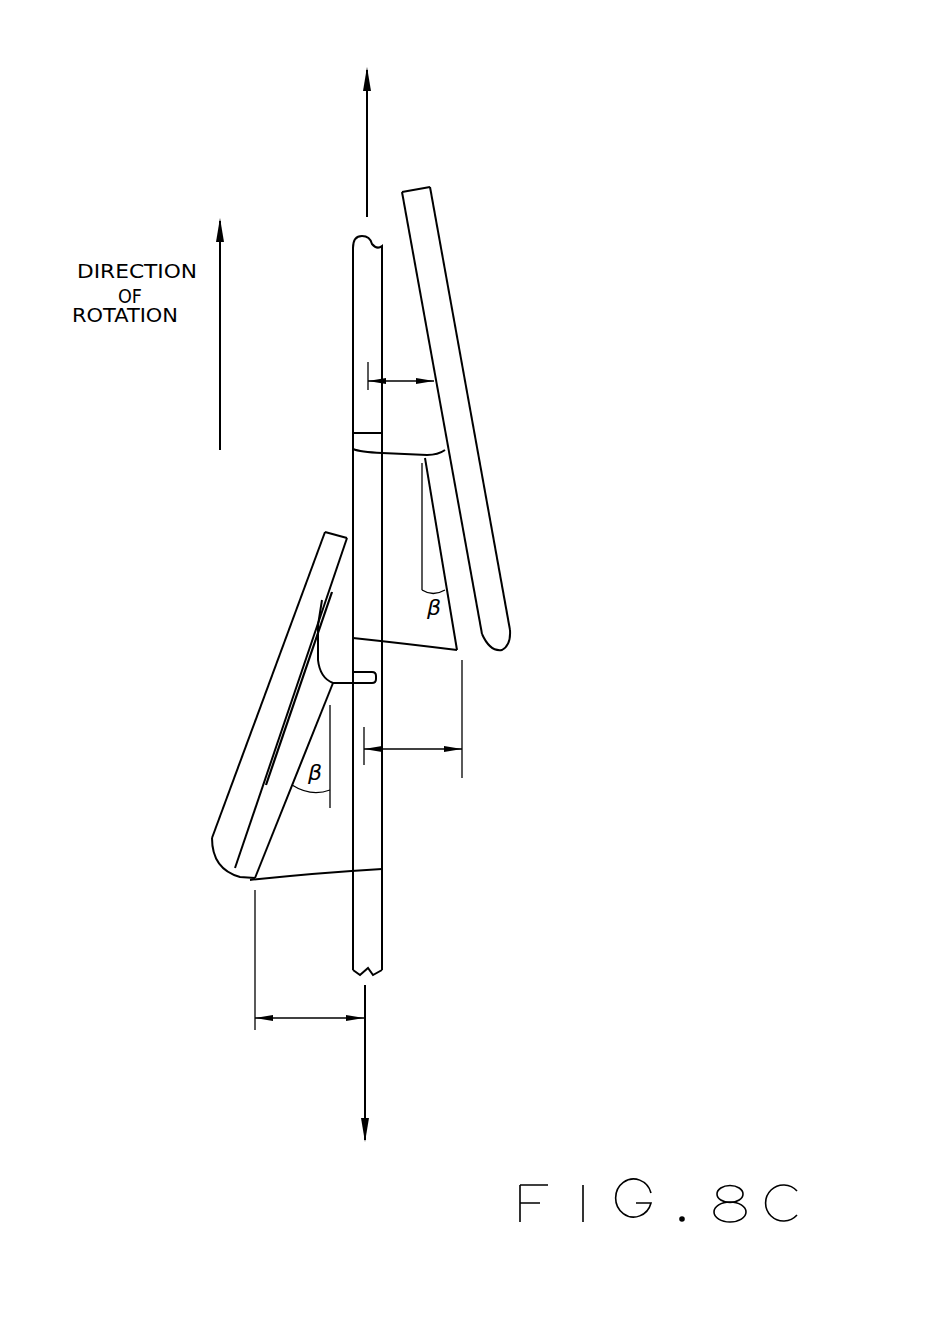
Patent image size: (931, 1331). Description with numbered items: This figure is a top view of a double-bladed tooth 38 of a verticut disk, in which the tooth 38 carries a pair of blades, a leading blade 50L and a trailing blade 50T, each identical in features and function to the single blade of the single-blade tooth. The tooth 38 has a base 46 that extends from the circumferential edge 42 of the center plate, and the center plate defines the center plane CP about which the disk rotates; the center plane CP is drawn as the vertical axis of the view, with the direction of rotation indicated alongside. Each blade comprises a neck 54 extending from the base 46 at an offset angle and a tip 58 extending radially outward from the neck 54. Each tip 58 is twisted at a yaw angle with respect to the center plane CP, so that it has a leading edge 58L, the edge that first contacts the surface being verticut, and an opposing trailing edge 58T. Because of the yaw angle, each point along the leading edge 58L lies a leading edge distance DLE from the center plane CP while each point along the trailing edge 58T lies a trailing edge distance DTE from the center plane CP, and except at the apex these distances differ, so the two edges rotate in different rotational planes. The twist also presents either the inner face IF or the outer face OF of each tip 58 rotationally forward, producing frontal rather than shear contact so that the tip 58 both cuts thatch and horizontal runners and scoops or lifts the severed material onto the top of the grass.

The tooth 38 is at (614, 361).
The circumferential edge 42 is at (368, 311).
The base 46 is at (373, 443).
The leading blade 50L is at (507, 444).
The trailing blade 50T is at (271, 641).
The neck 54 is at (400, 503).
The tip 58 is at (472, 395).
The leading edge 58L is at (422, 193).
The trailing edge 58T is at (487, 640).
The center plane CP is at (368, 609).
The leading edge distance DLE is at (402, 378).
The trailing edge distance DTE is at (418, 752).
The inner face IF is at (422, 323).
The outer face OF is at (460, 340).